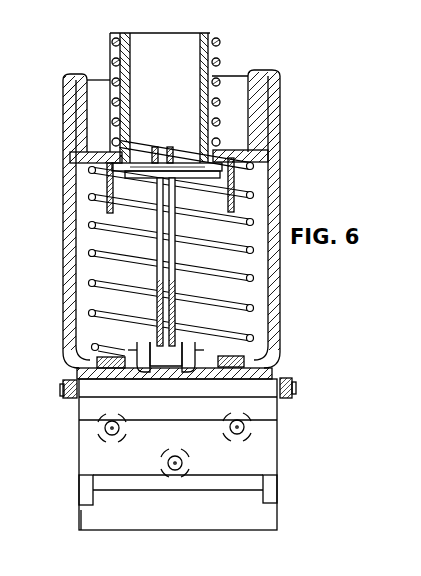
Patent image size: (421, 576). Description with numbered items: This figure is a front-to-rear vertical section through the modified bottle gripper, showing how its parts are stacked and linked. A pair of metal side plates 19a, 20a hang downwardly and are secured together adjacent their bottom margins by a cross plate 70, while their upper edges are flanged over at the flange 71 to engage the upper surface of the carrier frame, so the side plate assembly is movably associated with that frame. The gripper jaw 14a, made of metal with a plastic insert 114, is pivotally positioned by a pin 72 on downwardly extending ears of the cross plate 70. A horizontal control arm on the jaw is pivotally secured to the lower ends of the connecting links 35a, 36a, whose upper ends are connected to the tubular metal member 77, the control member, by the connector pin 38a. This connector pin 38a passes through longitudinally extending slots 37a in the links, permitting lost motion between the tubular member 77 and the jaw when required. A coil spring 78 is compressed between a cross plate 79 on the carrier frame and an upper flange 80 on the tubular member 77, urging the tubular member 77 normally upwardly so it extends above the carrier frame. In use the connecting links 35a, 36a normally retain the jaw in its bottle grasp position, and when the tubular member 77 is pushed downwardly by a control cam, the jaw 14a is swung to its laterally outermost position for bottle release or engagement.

The gripper jaw 14a is at (80, 443).
The side plate 19a is at (65, 286).
The side plate 20a is at (280, 292).
The connecting link 35a is at (153, 318).
The connecting link 36a is at (196, 322).
The longitudinally extending slot 37a is at (166, 276).
The connector pin 38a is at (185, 160).
The cross plate 70 is at (272, 370).
The flange 71 is at (70, 76).
The pin 72 is at (62, 394).
The tubular metal member 77 is at (150, 40).
The coil spring 78 is at (219, 64).
The cross plate 79 is at (75, 154).
The upper flange 80 is at (219, 41).
The plastic insert 114 is at (110, 520).